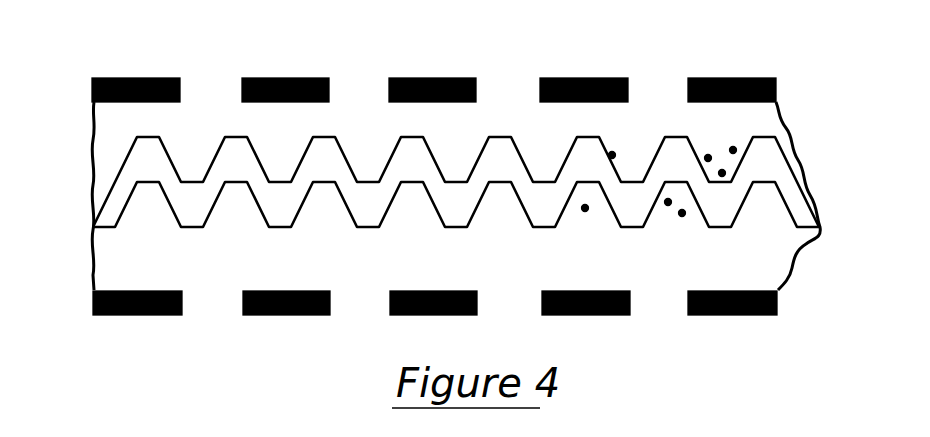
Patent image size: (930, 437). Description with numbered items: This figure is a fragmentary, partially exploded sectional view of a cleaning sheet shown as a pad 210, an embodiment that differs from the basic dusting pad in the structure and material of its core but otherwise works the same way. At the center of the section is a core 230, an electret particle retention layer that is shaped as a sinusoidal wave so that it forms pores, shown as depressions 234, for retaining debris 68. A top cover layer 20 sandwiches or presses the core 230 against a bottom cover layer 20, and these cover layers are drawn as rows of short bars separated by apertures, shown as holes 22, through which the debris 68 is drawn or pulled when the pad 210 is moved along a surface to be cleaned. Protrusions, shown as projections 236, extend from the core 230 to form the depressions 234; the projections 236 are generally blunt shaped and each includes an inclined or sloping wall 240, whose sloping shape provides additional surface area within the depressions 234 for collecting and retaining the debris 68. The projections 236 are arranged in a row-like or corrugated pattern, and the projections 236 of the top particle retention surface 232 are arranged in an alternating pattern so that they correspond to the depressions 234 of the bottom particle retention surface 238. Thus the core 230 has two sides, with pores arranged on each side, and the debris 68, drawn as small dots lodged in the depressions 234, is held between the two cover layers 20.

The cover layer 20 is at (112, 71).
The holes 22 is at (652, 80).
The debris 68 is at (615, 153).
The pad 210 is at (727, 42).
The core 230 is at (83, 226).
The top particle retention surface 232 is at (228, 136).
The depressions 234 is at (367, 160).
The projections 236 is at (120, 170).
The bottom particle retention surface 238 is at (235, 185).
The sloping wall 240 is at (437, 158).